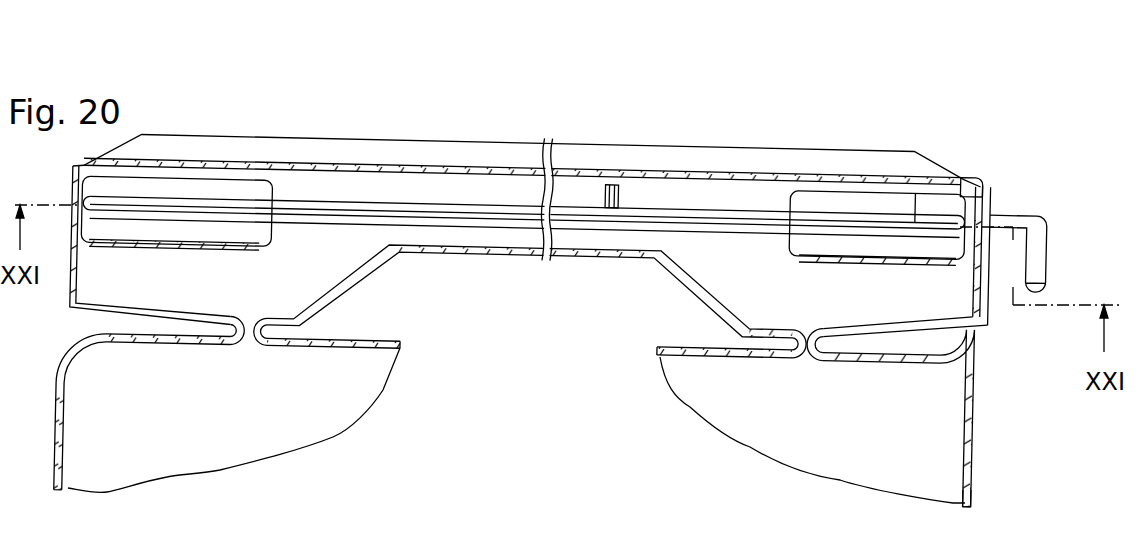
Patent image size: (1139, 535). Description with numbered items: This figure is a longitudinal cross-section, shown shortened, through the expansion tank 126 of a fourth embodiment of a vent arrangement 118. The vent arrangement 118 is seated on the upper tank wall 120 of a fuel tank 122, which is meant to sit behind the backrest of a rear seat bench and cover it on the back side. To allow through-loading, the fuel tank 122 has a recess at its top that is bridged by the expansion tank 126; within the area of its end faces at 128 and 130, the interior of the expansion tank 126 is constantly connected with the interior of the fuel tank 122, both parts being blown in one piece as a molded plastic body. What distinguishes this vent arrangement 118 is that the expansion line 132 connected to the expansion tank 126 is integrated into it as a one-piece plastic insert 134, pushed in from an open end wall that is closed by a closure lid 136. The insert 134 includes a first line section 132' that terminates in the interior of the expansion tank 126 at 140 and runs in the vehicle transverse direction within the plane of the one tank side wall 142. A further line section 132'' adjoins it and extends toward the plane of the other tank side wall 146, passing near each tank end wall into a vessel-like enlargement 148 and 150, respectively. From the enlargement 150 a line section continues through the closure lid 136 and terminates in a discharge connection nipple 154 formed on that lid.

The vent arrangement 118 is at (296, 136).
The upper tank wall 120 is at (370, 337).
The fuel tank 122 is at (978, 447).
The expansion tank 126 is at (860, 178).
The end face area 128 is at (810, 350).
The end face area 130 is at (253, 338).
The expansion line 132 is at (524, 165).
The first line section 132' is at (287, 155).
The line section 132'' is at (895, 196).
The insert 134 is at (730, 207).
The closure lid 136 is at (988, 295).
The termination point 140 is at (607, 185).
The tank side wall 142 is at (60, 422).
The tank side wall 146 is at (977, 477).
The vessel-like enlargement 148 is at (100, 195).
The vessel-like enlargement 150 is at (973, 181).
The discharge connection nipple 154 is at (1040, 260).